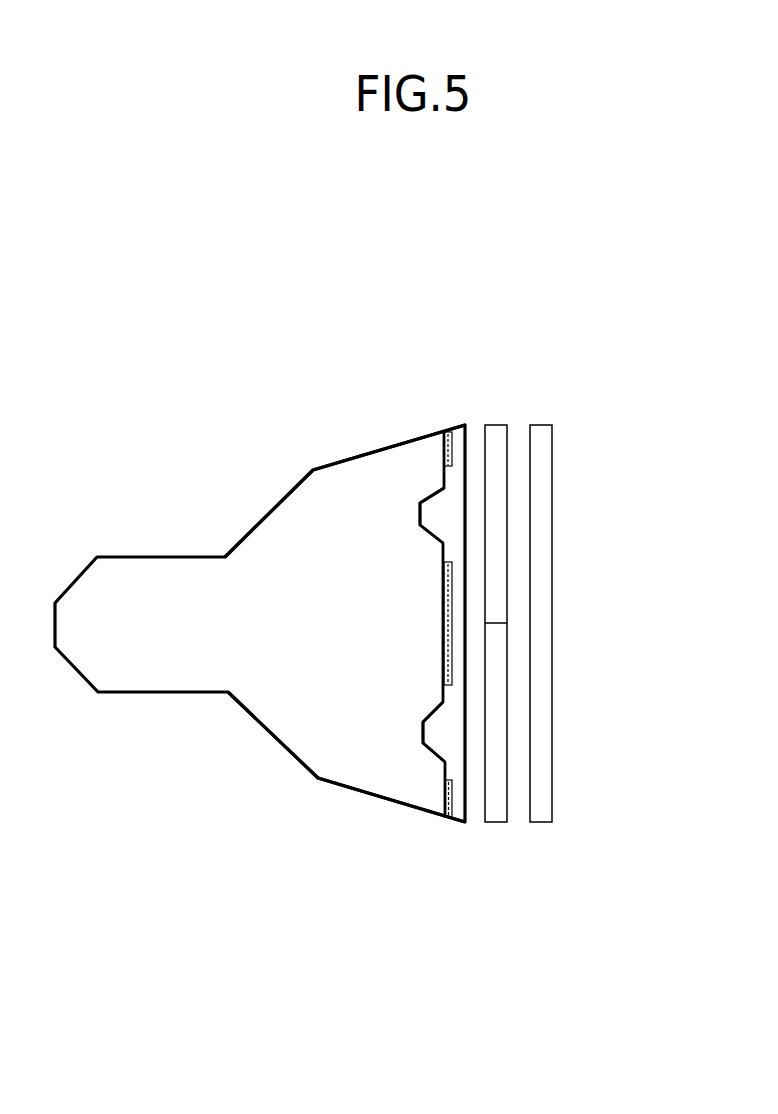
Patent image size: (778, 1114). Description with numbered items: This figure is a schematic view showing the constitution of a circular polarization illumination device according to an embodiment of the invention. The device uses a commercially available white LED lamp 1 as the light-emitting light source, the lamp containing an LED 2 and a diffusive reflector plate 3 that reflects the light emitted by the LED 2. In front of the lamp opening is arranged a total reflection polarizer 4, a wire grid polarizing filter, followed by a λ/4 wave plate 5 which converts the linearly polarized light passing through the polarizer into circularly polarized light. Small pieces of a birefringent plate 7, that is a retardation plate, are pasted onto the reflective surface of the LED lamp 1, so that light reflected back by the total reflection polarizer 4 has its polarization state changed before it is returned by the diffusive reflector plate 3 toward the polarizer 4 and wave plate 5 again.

The LED lamp 1 is at (262, 726).
The LED 2 is at (422, 722).
The diffusive reflector plate 3 is at (442, 595).
The total reflection polarizer 4 is at (497, 813).
The λ/4 wave plate 5 is at (540, 427).
The birefringent plate 7 is at (452, 443).